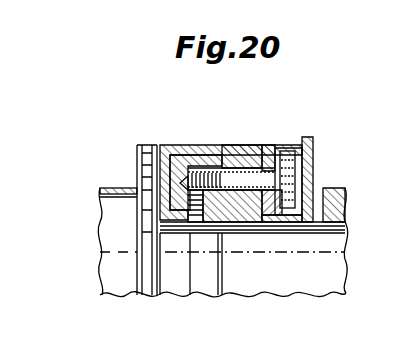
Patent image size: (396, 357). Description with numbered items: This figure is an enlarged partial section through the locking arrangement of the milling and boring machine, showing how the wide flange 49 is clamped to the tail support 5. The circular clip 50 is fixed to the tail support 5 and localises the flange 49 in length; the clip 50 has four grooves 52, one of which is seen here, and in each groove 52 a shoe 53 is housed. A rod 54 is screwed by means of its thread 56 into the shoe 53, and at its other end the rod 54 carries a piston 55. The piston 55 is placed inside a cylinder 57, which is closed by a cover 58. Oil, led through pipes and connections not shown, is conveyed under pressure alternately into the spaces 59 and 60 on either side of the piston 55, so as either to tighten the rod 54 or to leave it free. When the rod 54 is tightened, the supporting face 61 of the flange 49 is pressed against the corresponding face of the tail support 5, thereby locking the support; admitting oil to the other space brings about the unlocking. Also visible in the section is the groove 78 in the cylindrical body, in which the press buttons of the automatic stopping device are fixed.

The groove 78 is at (147, 154).
The circular clip 50 is at (163, 146).
The shoe 53 is at (190, 146).
The groove 52 is at (214, 146).
The space 59 is at (268, 146).
The space 60 is at (312, 152).
The cover 58 is at (315, 177).
The tail support 5 is at (347, 207).
The thread 56 is at (206, 206).
The supporting face 61 is at (217, 252).
The rod 54 is at (242, 192).
The cylinder 57 is at (278, 192).
The piston 55 is at (290, 212).
The wide flange 49 is at (214, 286).